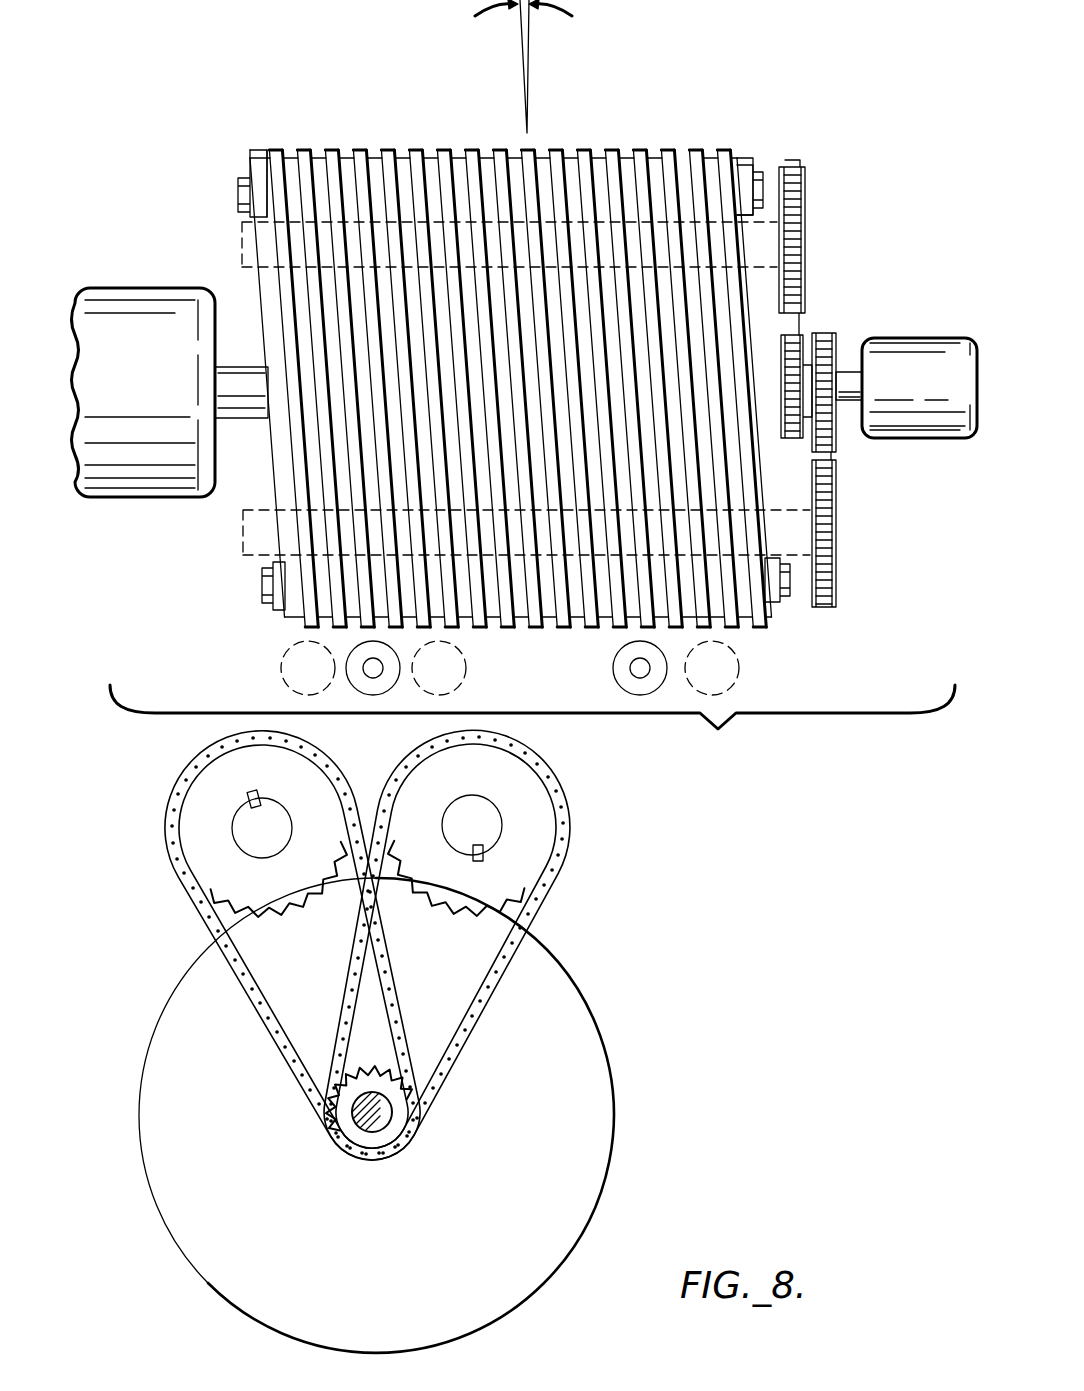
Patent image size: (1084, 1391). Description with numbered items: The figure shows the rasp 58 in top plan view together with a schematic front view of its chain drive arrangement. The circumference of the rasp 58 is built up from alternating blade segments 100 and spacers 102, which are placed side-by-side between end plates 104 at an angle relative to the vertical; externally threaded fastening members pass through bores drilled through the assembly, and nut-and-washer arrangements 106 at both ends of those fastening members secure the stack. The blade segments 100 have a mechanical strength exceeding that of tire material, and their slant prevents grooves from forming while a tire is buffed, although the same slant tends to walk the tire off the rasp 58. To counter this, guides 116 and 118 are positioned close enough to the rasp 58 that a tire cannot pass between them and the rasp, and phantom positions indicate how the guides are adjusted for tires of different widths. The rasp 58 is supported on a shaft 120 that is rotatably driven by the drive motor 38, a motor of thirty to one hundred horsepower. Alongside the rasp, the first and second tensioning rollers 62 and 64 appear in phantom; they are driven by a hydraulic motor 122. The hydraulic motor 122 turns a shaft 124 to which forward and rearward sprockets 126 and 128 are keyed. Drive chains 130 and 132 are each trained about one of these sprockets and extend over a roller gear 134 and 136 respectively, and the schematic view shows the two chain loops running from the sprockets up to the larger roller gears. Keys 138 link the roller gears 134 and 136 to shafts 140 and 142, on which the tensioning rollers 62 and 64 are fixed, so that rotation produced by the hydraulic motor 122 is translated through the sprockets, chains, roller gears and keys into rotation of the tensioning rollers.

In FIG. 6, the rasp 58 is at (525, 424).
In FIG. 8, the rasp 58 is at (588, 1073).
In FIG. 6, the drive motor 38 is at (166, 497).
In FIG. 6, the first tensioning roller 62 is at (243, 537).
In FIG. 6, the second tensioning roller 64 is at (240, 232).
In FIG. 6, the blade segment 100 is at (500, 149).
In FIG. 6, the spacer 102 is at (672, 149).
In FIG. 6, the end plate 104 is at (254, 158).
In FIG. 6, the nut-and-washer arrangement 106 is at (240, 192).
In FIG. 6, the guide 116 is at (297, 644).
In FIG. 6, the guide 118 is at (683, 668).
In FIG. 6, the shaft 120 is at (242, 366).
In FIG. 6, the hydraulic motor 122 is at (905, 340).
In FIG. 6, the shaft 124 is at (848, 372).
In FIG. 8, the shaft 124 is at (357, 1117).
In FIG. 6, the forward sprocket 126 is at (837, 428).
In FIG. 8, the forward sprocket 126 is at (395, 1133).
In FIG. 6, the rearward sprocket 128 is at (783, 418).
In FIG. 6, the drive chain 130 is at (833, 455).
In FIG. 8, the drive chain 130 is at (262, 995).
In FIG. 6, the drive chain 132 is at (803, 260).
In FIG. 8, the drive chain 132 is at (478, 995).
In FIG. 6, the roller gear 134 is at (838, 563).
In FIG. 8, the roller gear 134 is at (213, 753).
In FIG. 6, the roller gear 136 is at (806, 215).
In FIG. 8, the roller gear 136 is at (507, 764).
In FIG. 8, the key 138 is at (252, 794).
In FIG. 8, the shaft 140 is at (237, 850).
In FIG. 8, the shaft 142 is at (503, 822).